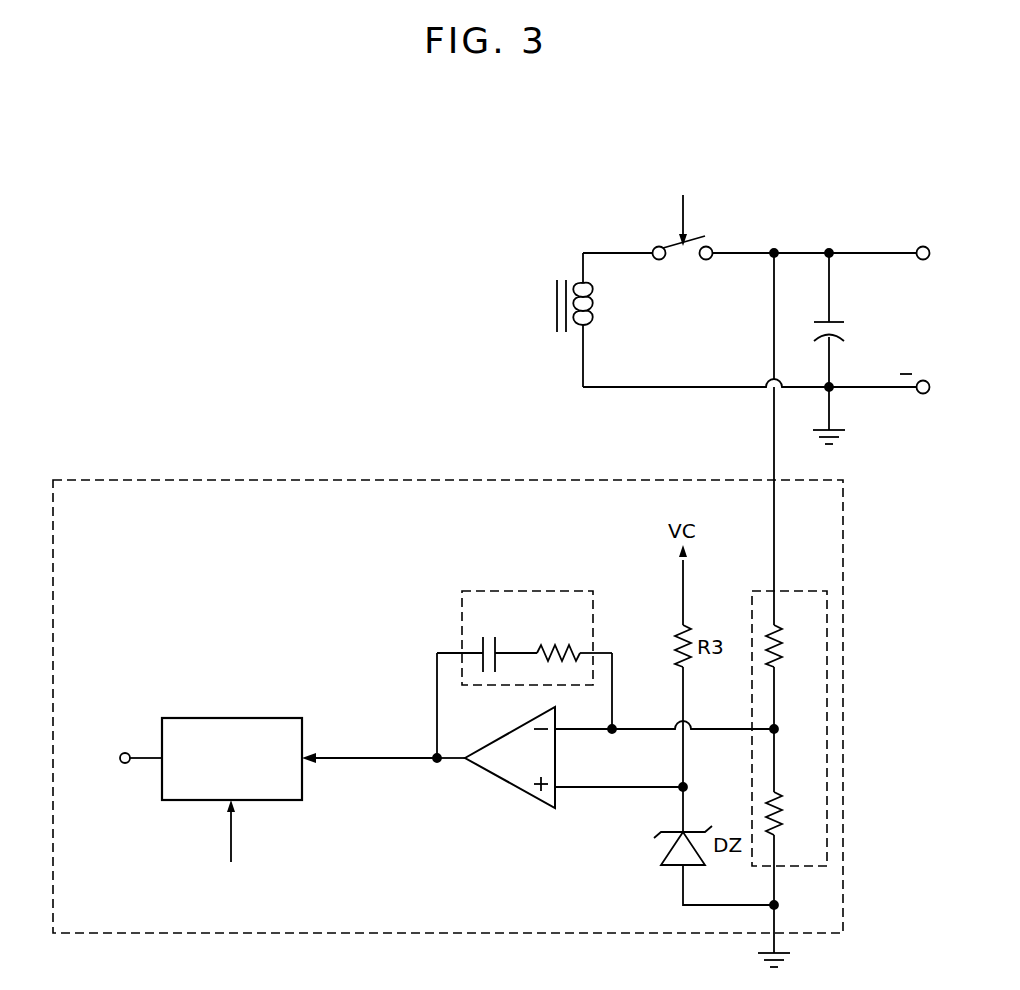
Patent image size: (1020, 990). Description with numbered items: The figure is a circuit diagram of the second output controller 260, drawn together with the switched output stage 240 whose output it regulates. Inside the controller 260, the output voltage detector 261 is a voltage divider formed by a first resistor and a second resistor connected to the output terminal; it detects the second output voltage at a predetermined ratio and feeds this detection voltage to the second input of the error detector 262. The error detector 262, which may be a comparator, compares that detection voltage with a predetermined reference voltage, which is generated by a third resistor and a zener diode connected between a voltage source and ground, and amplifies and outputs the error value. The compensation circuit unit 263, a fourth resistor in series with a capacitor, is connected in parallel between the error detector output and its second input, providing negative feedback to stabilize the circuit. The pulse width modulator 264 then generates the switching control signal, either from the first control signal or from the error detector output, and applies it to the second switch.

The switching power converter output stage 240 is at (813, 208).
The second output controller 260 is at (348, 479).
The output voltage detector 261 is at (804, 590).
The error detector 262 is at (507, 785).
The compensation circuit unit 263 is at (527, 590).
The pulse width modulator (PWM) 264 is at (235, 717).